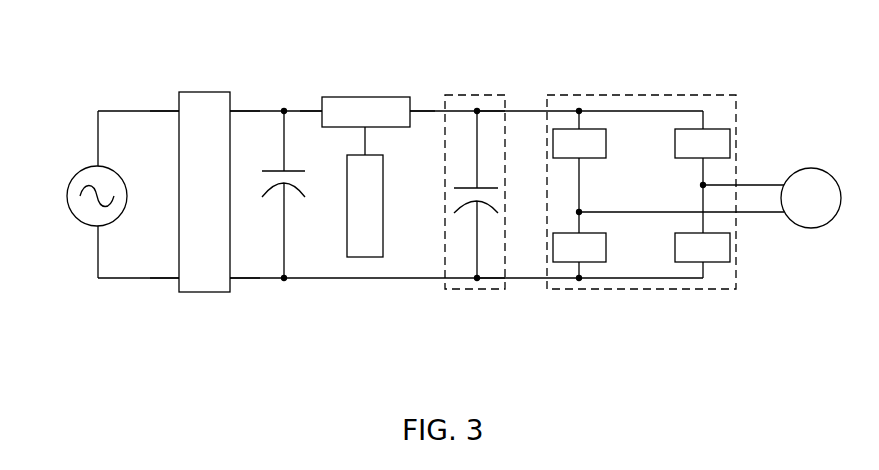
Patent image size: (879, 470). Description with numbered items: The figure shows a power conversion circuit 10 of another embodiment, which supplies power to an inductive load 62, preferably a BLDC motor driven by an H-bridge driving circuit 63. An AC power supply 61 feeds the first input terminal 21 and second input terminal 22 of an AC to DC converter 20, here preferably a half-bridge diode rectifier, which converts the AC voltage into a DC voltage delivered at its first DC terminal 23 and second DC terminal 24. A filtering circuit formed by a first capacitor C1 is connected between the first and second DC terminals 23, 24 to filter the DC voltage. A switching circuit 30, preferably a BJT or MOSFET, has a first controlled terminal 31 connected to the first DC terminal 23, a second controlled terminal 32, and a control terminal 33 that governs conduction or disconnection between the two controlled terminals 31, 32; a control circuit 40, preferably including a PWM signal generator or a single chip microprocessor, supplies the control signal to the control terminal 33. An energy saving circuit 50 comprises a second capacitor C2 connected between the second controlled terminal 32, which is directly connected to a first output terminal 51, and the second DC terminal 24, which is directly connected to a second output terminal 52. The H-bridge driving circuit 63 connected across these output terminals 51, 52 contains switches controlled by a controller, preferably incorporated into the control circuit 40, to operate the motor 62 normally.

The power conversion circuit 10 is at (555, 64).
The AC to DC converter 20 is at (197, 92).
The first input terminal 21 is at (164, 123).
The second input terminal 22 is at (164, 268).
The first DC terminal 23 is at (245, 123).
The second DC terminal 24 is at (245, 268).
The switching circuit 30 is at (355, 97).
The first controlled terminal 31 is at (311, 102).
The second controlled terminal 32 is at (422, 102).
The control terminal 33 is at (353, 141).
The control circuit 40 is at (383, 187).
The energy saving circuit 50 is at (462, 92).
The first output terminal 51 is at (503, 123).
The second output terminal 52 is at (503, 269).
The AC power supply 61 is at (72, 212).
The inductive load 62 is at (810, 168).
The H-bridge driving circuit 63 is at (675, 92).
The first capacitor C1 is at (290, 195).
The second capacitor C2 is at (473, 195).